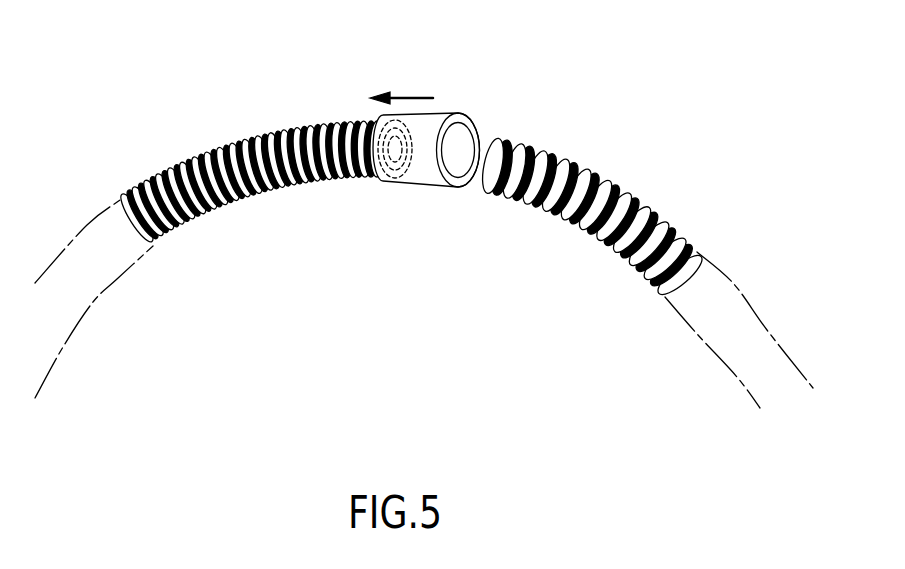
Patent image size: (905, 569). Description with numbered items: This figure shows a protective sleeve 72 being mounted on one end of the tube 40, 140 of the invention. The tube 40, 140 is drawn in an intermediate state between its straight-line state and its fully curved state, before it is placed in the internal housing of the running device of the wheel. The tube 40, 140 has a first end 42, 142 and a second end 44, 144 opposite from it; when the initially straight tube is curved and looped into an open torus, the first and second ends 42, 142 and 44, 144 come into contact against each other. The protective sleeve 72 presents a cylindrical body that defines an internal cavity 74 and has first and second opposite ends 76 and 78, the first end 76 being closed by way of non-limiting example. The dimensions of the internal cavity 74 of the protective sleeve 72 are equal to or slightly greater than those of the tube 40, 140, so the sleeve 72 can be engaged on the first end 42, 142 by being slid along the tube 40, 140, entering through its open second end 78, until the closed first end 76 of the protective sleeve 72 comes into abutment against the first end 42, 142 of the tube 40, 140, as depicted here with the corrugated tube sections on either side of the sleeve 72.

The tube 40 is at (250, 151).
The tube 140 is at (233, 122).
The second end 44 is at (593, 203).
The second end 144 is at (511, 143).
The first end 42 is at (377, 173).
The first end 142 is at (400, 182).
The protective sleeve 72 is at (430, 149).
The internal cavity 74 is at (422, 157).
The first end 76 is at (478, 130).
The second end 78 is at (364, 122).